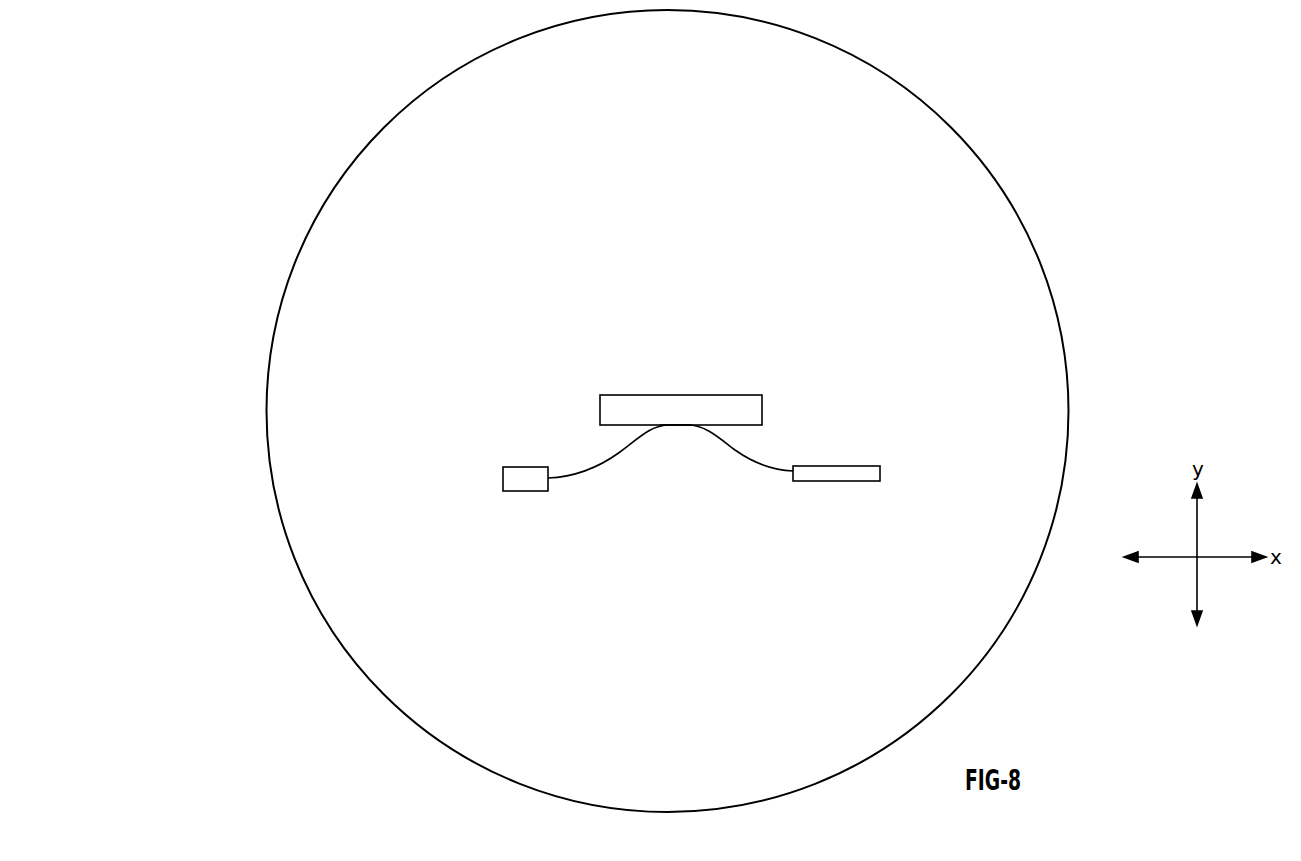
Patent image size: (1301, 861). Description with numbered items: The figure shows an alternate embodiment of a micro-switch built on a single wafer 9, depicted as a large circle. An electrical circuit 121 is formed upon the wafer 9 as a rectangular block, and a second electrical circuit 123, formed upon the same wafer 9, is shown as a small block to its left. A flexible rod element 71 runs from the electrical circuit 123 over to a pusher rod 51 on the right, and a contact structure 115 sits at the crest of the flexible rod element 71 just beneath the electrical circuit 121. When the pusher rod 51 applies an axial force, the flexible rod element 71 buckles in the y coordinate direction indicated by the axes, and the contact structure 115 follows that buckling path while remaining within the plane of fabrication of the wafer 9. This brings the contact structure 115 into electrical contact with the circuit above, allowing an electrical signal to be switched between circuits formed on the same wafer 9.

The wafer 9 is at (700, 83).
The electrical circuit 121 is at (688, 407).
The electrical circuit 123 is at (520, 477).
The pusher rod 51 is at (837, 465).
The flexible rod element 71 is at (745, 455).
The contact structure 115 is at (681, 425).